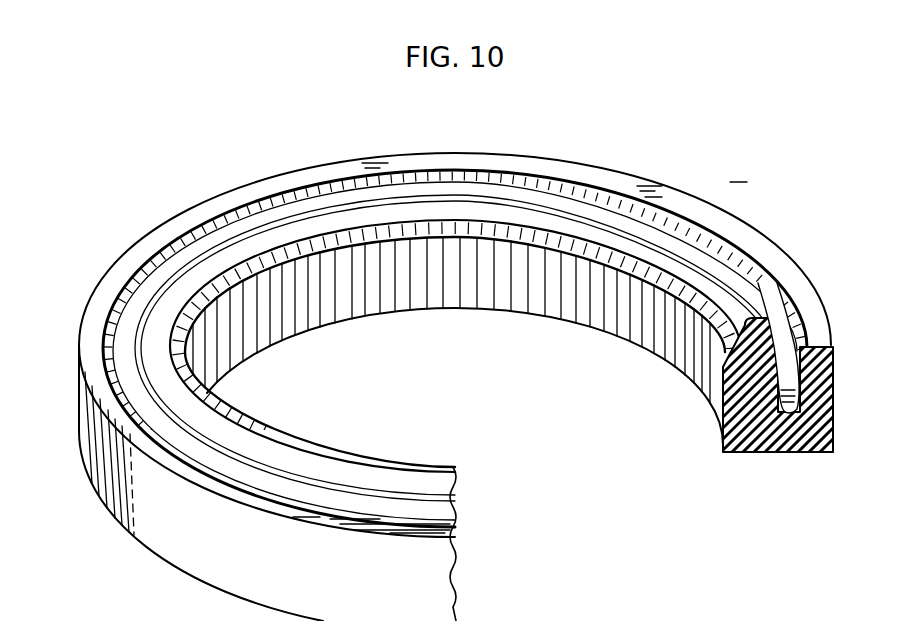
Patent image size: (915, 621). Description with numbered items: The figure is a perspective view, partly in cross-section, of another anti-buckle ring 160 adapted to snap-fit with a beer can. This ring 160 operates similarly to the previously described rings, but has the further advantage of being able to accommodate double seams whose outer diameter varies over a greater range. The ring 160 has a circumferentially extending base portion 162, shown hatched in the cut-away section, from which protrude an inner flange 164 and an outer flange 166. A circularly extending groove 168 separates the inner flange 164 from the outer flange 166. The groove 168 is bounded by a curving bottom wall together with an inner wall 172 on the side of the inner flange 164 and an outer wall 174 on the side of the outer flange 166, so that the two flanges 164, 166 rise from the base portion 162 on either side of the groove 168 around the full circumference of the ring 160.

The anti-buckle ring 160 is at (607, 167).
The base portion 162 is at (784, 452).
The inner flange 164 is at (727, 415).
The outer flange 166 is at (822, 393).
The groove 168 is at (785, 378).
The inner wall 172 is at (726, 384).
The outer wall 174 is at (828, 375).